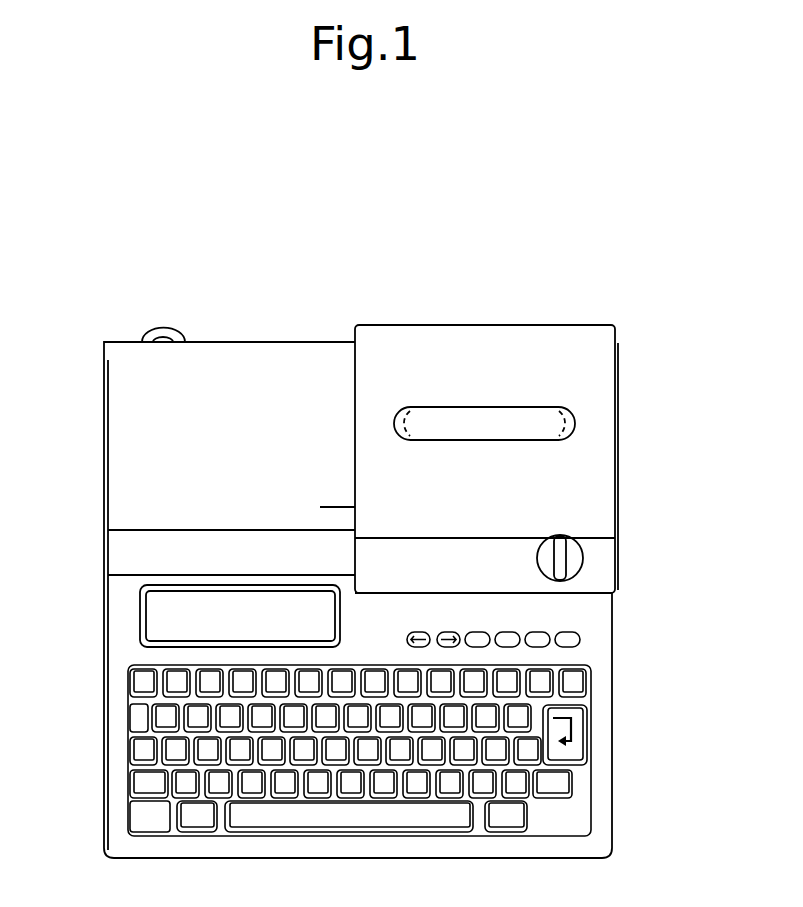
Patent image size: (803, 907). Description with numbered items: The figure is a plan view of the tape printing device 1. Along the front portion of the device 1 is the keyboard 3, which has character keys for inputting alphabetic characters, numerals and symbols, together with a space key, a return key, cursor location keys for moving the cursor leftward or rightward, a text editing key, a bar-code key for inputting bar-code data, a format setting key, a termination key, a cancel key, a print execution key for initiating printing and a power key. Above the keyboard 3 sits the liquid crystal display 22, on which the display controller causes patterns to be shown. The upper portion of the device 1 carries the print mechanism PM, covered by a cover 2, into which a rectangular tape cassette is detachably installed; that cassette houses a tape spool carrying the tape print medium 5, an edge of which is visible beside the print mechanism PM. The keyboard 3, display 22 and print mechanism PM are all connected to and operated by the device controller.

The tape printing device 1 is at (645, 352).
The printer cover 2 is at (620, 449).
The print mechanism PM is at (386, 352).
The tape print medium 5 is at (326, 506).
The liquid crystal display 22 is at (152, 610).
The keyboard 3 is at (258, 837).